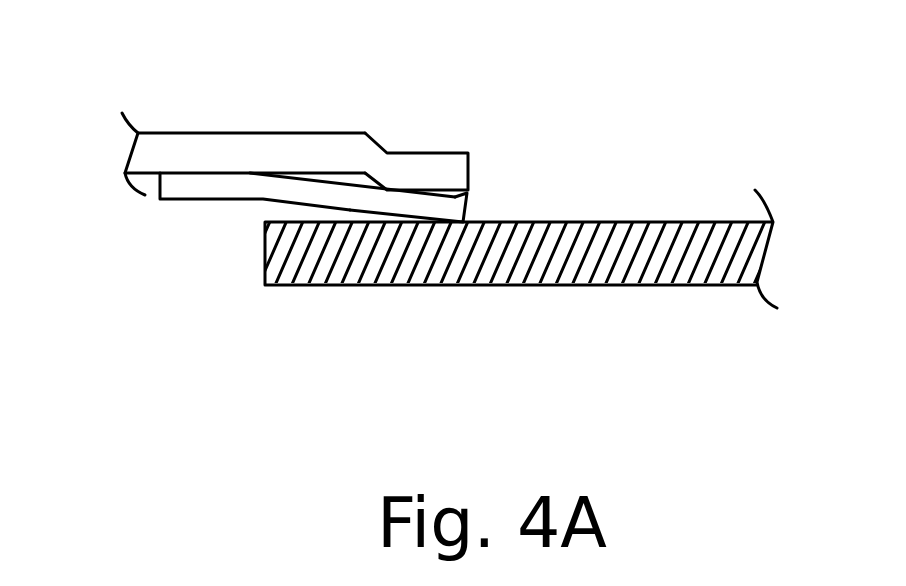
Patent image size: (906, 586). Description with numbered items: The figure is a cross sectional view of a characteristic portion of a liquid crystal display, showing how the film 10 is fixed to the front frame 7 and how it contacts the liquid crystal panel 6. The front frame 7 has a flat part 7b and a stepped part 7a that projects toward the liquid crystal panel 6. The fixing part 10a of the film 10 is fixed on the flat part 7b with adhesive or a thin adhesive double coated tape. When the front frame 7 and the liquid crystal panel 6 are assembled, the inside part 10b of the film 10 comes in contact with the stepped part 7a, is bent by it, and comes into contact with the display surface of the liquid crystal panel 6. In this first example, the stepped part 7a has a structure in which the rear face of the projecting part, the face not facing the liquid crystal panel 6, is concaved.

The liquid crystal panel 6 is at (615, 221).
The front frame 7 is at (332, 97).
The stepped part 7a is at (429, 151).
The flat part 7b is at (200, 133).
The film 10 is at (337, 224).
The fixing part 10a is at (180, 200).
The inside part 10b is at (472, 189).